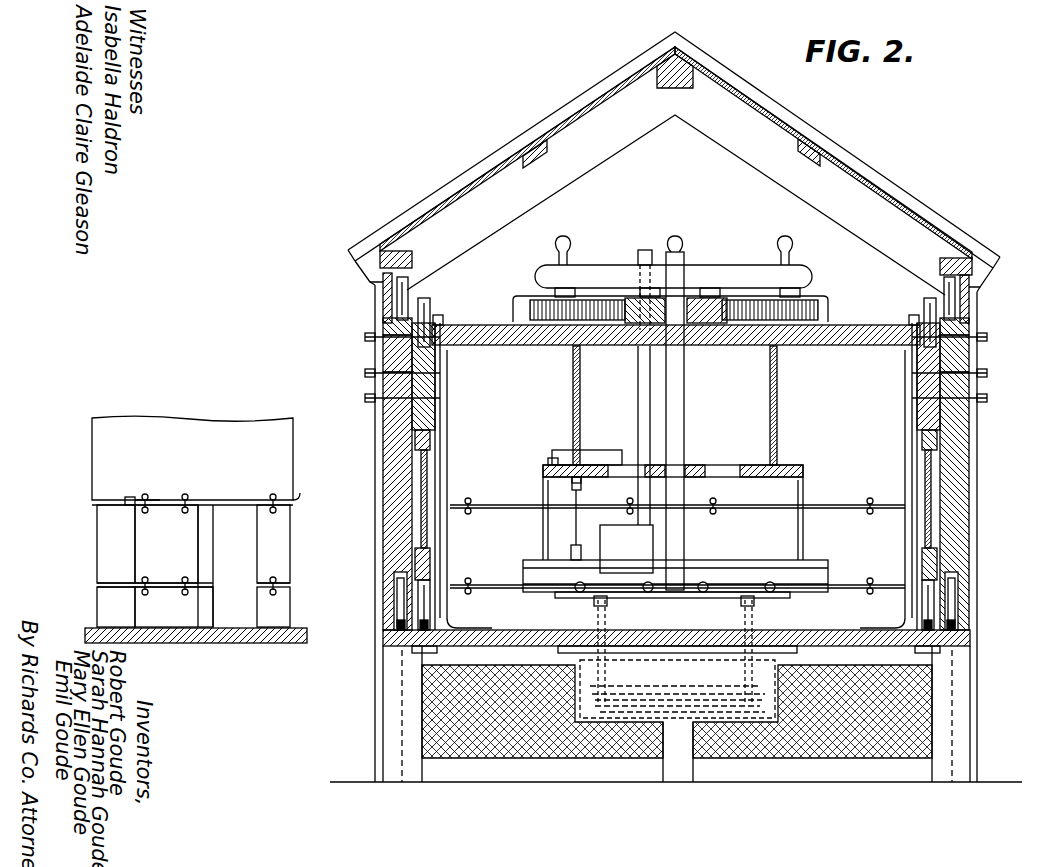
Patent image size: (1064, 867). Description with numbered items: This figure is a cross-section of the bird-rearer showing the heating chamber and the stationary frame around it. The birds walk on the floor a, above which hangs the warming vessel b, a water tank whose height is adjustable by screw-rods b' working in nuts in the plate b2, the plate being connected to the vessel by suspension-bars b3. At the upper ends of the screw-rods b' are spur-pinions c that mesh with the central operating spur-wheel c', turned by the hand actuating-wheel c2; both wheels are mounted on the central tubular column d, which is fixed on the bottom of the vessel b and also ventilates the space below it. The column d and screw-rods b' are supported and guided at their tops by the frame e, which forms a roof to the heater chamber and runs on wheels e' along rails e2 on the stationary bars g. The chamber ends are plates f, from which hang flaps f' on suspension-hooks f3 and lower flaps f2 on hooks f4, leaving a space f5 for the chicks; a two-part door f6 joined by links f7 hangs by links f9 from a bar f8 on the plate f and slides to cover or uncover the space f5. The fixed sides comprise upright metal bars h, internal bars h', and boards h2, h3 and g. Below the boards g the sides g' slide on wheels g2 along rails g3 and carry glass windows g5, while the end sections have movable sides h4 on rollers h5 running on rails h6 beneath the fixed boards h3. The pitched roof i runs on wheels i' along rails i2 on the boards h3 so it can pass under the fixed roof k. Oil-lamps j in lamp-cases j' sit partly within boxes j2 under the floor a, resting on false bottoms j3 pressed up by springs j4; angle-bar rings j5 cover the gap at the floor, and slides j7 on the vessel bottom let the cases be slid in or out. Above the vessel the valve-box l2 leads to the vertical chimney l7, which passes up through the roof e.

The floor a is at (383, 640).
The warming vessel b is at (675, 580).
The screw-rods b' is at (656, 405).
The plate b2 is at (545, 470).
The suspension-bars b3 is at (545, 522).
The spur-pinions c is at (680, 299).
The central operating spur-wheel c' is at (670, 306).
The hand actuating-wheel c2 is at (612, 276).
The central tubular column d is at (684, 256).
The frame e is at (676, 354).
The wheels e' is at (677, 313).
The rails e2 is at (438, 343).
The plates f is at (498, 500).
The flap f' is at (486, 544).
The lower flap f2 is at (480, 607).
The suspension-hooks f3 is at (472, 504).
The hooks f4 is at (470, 583).
The space f5 is at (692, 537).
The door f6 is at (174, 566).
The links f7 is at (148, 582).
The bar f8 is at (135, 498).
The links f9 is at (184, 496).
The stationary bars g is at (676, 376).
The sides g' is at (676, 506).
The wheels g2 is at (430, 606).
The rails g3 is at (430, 648).
The glass windows g5 is at (428, 472).
The upright metal bars h is at (670, 532).
The upright internal metal bars h' is at (676, 476).
The longitudinal boards h2 is at (386, 352).
The frame-boards h3 is at (386, 396).
The longitudinally-movable sides h4 is at (398, 444).
The rollers h5 is at (398, 606).
The rails h6 is at (398, 627).
The outer pitched roof i is at (676, 171).
The wheels i' is at (676, 292).
The rails i2 is at (390, 326).
The oil-lamps j is at (677, 683).
The lamp-cases j' is at (701, 648).
The boxes j2 is at (660, 718).
The false bottoms j3 is at (680, 696).
The springs j4 is at (640, 700).
The angle-bar rings j5 is at (760, 623).
The slides j7 is at (612, 590).
The fixed roof k is at (652, 64).
The valve-box l2 is at (618, 544).
The chimney l7 is at (644, 252).